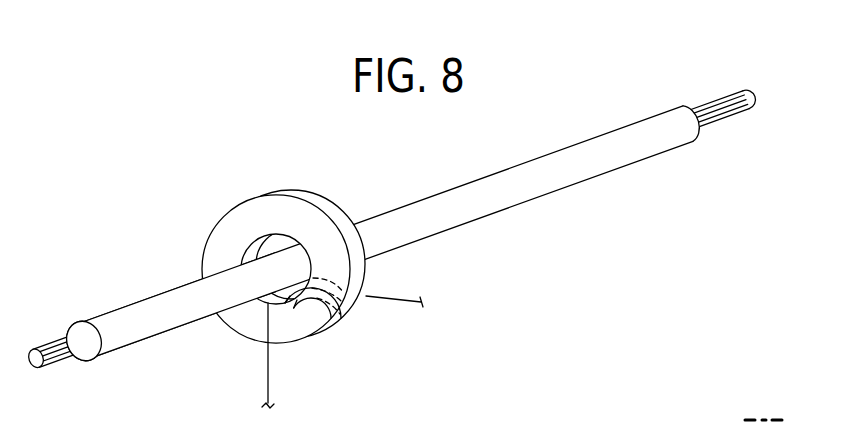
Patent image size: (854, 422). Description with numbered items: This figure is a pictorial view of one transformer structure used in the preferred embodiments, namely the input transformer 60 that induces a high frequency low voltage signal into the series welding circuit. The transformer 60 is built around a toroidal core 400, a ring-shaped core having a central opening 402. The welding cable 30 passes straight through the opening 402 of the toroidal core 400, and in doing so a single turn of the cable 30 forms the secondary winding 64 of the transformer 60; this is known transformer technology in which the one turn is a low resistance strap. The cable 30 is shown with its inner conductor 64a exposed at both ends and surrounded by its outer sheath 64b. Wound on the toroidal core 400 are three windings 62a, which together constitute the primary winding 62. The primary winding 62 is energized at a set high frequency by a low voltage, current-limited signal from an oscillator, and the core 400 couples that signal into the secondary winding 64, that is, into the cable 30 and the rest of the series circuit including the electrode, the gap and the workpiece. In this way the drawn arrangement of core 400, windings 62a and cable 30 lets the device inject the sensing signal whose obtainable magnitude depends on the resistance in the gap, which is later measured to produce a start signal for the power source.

The cable 30 is at (406, 238).
The input transformer 60 is at (236, 230).
The primary winding 62 is at (384, 343).
The windings 62a is at (314, 340).
The secondary winding 64 is at (406, 219).
The conductor 64a is at (718, 122).
The sheath 64b is at (600, 173).
The toroidal core 400 is at (213, 228).
The opening 402 is at (252, 250).